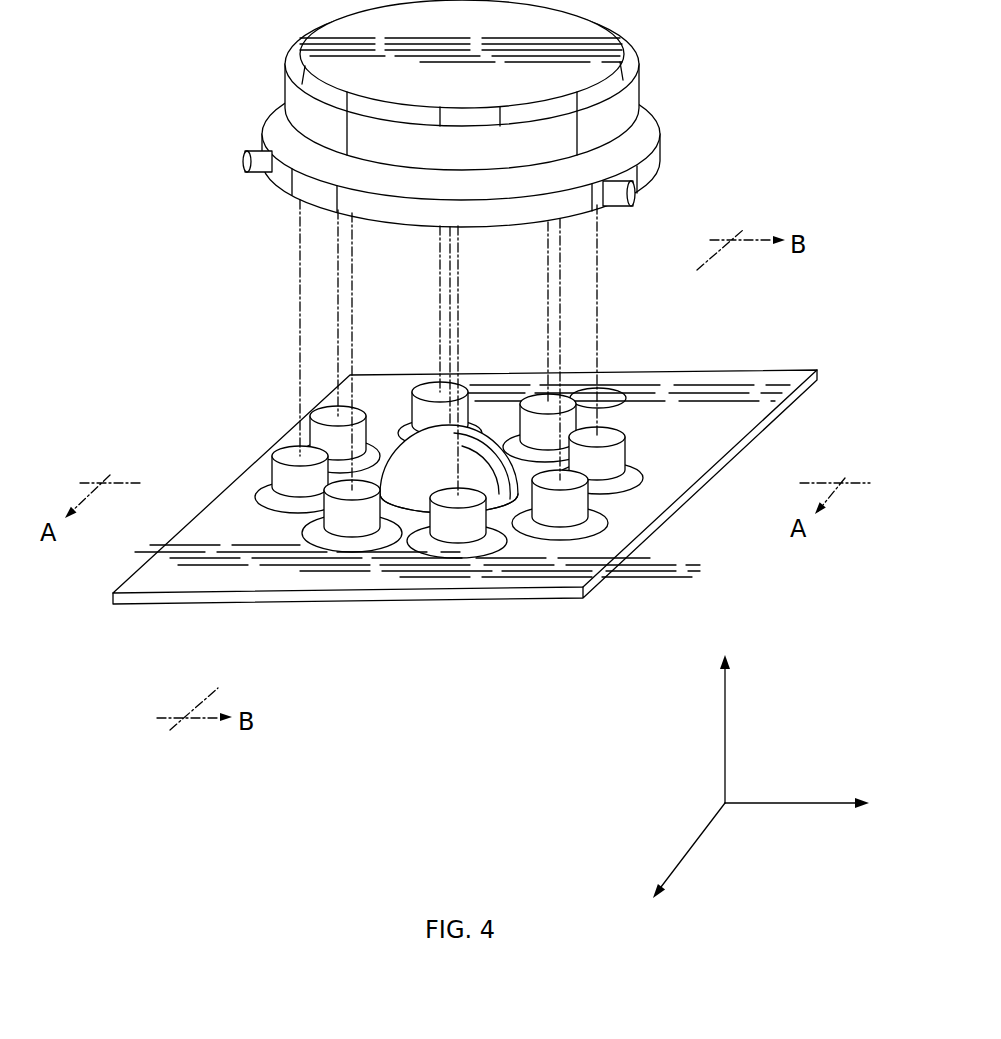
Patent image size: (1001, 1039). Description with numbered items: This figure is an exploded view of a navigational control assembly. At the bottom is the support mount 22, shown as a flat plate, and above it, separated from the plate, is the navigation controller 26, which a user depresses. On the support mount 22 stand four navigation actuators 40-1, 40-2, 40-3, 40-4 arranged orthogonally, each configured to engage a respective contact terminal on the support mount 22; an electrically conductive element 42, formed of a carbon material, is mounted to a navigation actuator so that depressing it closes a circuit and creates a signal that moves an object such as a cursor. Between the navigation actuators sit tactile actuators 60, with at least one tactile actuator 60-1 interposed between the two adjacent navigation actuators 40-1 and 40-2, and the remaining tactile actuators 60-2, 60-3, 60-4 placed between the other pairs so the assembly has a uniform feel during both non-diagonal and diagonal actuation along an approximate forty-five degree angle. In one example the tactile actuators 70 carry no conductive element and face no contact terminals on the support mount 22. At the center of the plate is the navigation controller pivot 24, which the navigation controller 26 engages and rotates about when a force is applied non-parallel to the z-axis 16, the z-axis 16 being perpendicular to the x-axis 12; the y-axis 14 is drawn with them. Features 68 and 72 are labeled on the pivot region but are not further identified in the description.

The x-axis 12 is at (780, 803).
The y axis 14 is at (695, 842).
The z-axis 16 is at (725, 757).
The support mount 22 is at (610, 576).
The navigation controller pivot 24 is at (583, 433).
The navigation controller 26 is at (642, 87).
The navigation actuator 40-1 is at (605, 453).
The navigation actuator 40-2 is at (455, 515).
The navigation actuator 40-3 is at (290, 480).
The navigation actuator 40-4 is at (434, 410).
The electrically conductive element 42 is at (572, 496).
The tactile actuators 60 is at (640, 285).
The tactile actuator 60-1 is at (590, 503).
The spacer 60-2 is at (343, 515).
The spacer 60-3 is at (313, 432).
The spacer 60-4 is at (560, 425).
The dome rim 68 is at (552, 474).
The tactile actuators 70 is at (462, 424).
The washer 72 is at (387, 523).